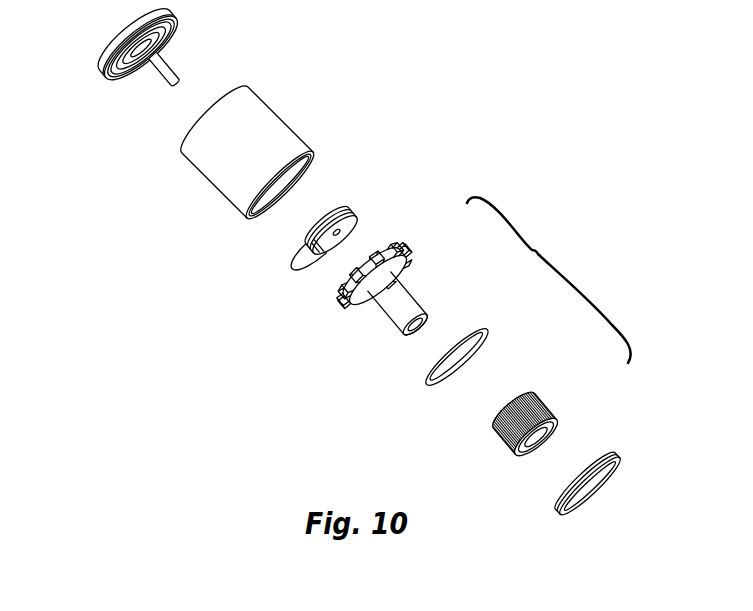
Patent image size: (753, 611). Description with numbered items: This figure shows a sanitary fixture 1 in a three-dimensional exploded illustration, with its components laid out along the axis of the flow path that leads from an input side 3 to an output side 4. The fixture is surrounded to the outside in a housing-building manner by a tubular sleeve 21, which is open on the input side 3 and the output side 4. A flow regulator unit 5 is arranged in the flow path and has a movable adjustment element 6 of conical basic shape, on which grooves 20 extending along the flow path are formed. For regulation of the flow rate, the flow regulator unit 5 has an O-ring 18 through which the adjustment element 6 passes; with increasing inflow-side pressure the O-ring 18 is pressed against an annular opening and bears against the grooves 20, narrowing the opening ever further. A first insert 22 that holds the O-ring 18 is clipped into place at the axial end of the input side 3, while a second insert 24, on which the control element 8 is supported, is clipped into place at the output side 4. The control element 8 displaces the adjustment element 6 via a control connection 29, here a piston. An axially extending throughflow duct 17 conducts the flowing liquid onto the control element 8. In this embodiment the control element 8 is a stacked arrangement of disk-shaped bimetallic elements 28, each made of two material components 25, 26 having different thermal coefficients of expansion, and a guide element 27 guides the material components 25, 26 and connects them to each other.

The sanitary fixture 1 is at (190, 330).
The input side 3 is at (645, 534).
The output side 4 is at (92, 44).
The flow regulator unit 5 is at (549, 280).
The adjustment element 6 is at (560, 388).
The control element 8 is at (386, 198).
The throughflow duct 17 is at (396, 291).
The O-ring 18 is at (430, 380).
The grooves 20 is at (498, 438).
The tubular sleeve 21 is at (213, 170).
The first insert 22 is at (573, 518).
The second insert 24 is at (183, 22).
The material component 25 is at (316, 257).
The material component 26 is at (305, 257).
The guide element 27 is at (165, 82).
The bimetallic element 28 is at (352, 226).
The control connection 29 is at (385, 312).